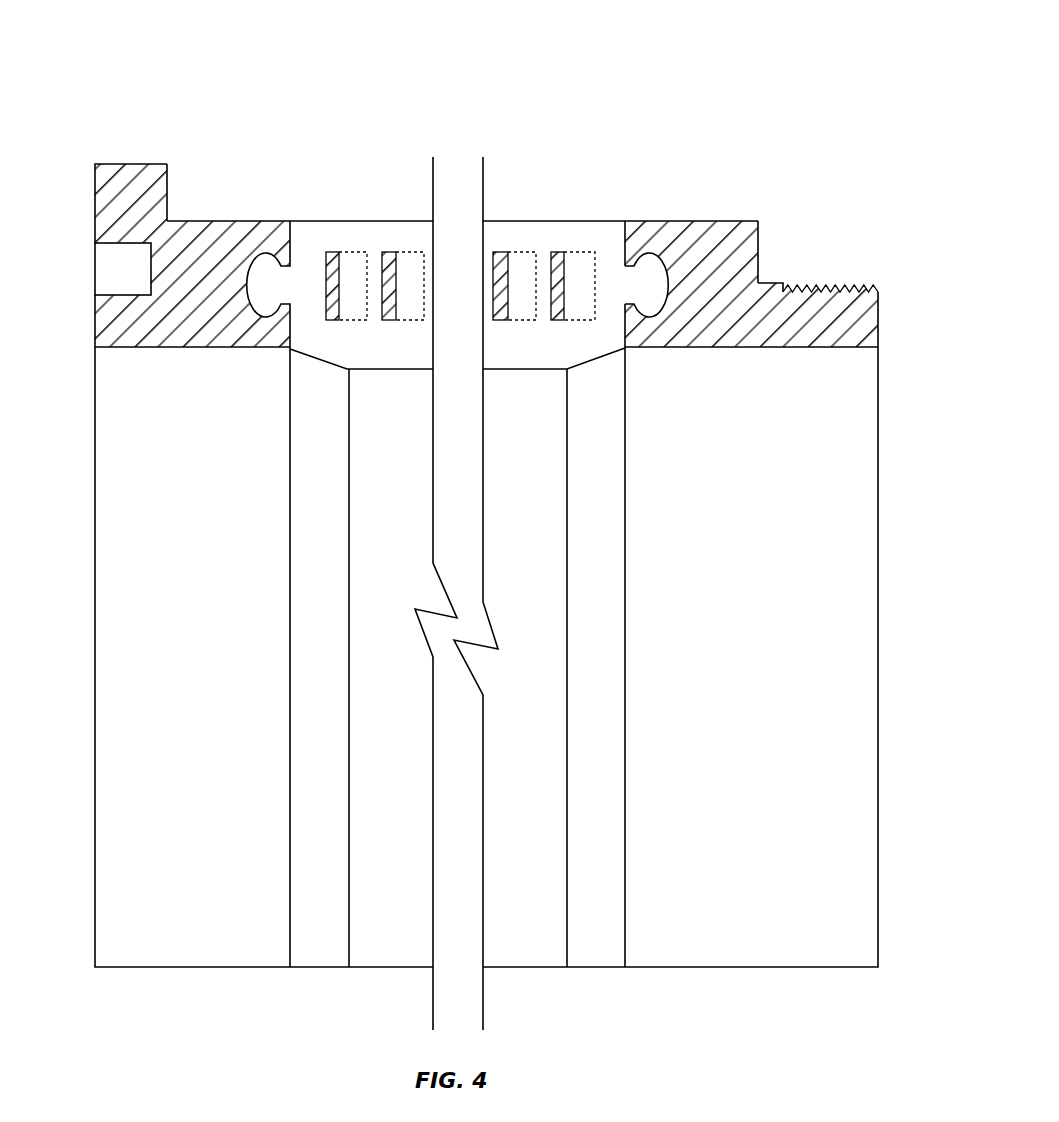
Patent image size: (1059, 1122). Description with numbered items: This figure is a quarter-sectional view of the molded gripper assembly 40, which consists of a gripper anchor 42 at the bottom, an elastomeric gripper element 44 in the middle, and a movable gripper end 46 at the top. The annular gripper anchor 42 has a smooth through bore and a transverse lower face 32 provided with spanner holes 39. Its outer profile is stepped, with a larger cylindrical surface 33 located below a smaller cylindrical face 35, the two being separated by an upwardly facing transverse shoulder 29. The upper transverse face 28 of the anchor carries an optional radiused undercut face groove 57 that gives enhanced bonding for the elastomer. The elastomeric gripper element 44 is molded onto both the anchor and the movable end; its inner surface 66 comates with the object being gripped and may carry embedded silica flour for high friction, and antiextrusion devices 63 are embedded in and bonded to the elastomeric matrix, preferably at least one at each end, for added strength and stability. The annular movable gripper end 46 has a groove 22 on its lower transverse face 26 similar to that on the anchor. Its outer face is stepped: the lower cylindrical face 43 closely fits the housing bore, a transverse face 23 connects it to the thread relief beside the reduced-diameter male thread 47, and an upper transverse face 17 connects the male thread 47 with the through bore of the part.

The gripper assembly 40 is at (657, 100).
The larger cylindrical surface 33 is at (112, 164).
The upwardly facing transverse shoulder 29 is at (167, 188).
The smaller cylindrical face 35 is at (230, 221).
The upper transverse face 28 is at (290, 258).
The spanner holes 39 is at (118, 293).
The transverse lower face 32 is at (95, 320).
The gripper anchor 42 is at (107, 348).
The radiused undercut face groove 57 is at (208, 348).
The inner surface 66 is at (362, 370).
The antiextrusion devices 63 is at (382, 320).
The elastomeric gripper element 44 is at (492, 222).
The lower transverse face 26 is at (623, 227).
The groove 22 is at (658, 312).
The movable gripper end 46 is at (670, 222).
The lower cylindrical face 43 is at (733, 222).
The transverse face 23 is at (760, 245).
The male thread 47 is at (785, 288).
The upper transverse face 17 is at (880, 315).